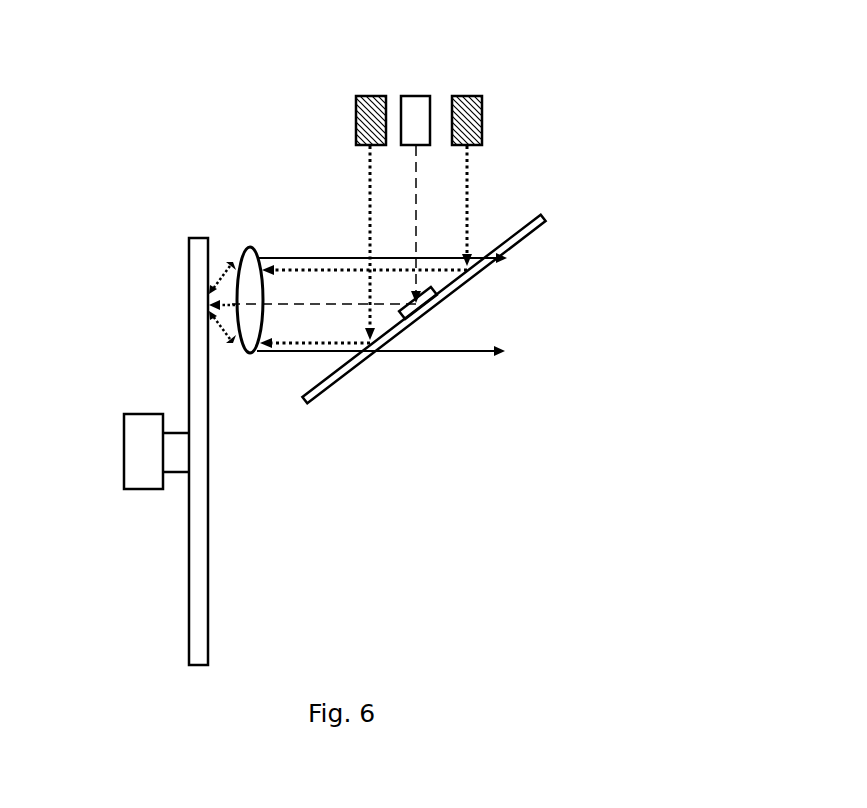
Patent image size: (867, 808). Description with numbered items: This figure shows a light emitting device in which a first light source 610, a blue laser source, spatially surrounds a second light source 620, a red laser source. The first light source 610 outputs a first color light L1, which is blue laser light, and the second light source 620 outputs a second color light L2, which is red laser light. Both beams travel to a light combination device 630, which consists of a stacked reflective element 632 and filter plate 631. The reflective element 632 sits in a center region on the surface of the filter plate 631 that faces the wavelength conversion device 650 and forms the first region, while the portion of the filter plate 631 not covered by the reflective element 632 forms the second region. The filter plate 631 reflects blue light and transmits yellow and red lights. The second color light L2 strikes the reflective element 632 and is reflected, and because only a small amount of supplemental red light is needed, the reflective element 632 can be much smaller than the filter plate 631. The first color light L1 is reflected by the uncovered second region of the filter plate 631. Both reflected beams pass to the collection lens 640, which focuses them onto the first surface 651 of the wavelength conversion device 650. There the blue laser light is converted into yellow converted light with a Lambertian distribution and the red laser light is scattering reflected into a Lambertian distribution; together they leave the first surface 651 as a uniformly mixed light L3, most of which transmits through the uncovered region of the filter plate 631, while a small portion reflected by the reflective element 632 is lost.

The first light source 610 is at (356, 112).
The second light source 620 is at (415, 112).
The light combination device 630 is at (509, 305).
The filter plate 631 is at (533, 235).
The reflective element 632 is at (505, 303).
The collection lens 640 is at (250, 355).
The wavelength conversion device 650 is at (202, 451).
The first surface 651 is at (207, 612).
The first color light L1 is at (469, 178).
The second color light L2 is at (372, 183).
The mixed light L3 is at (424, 352).